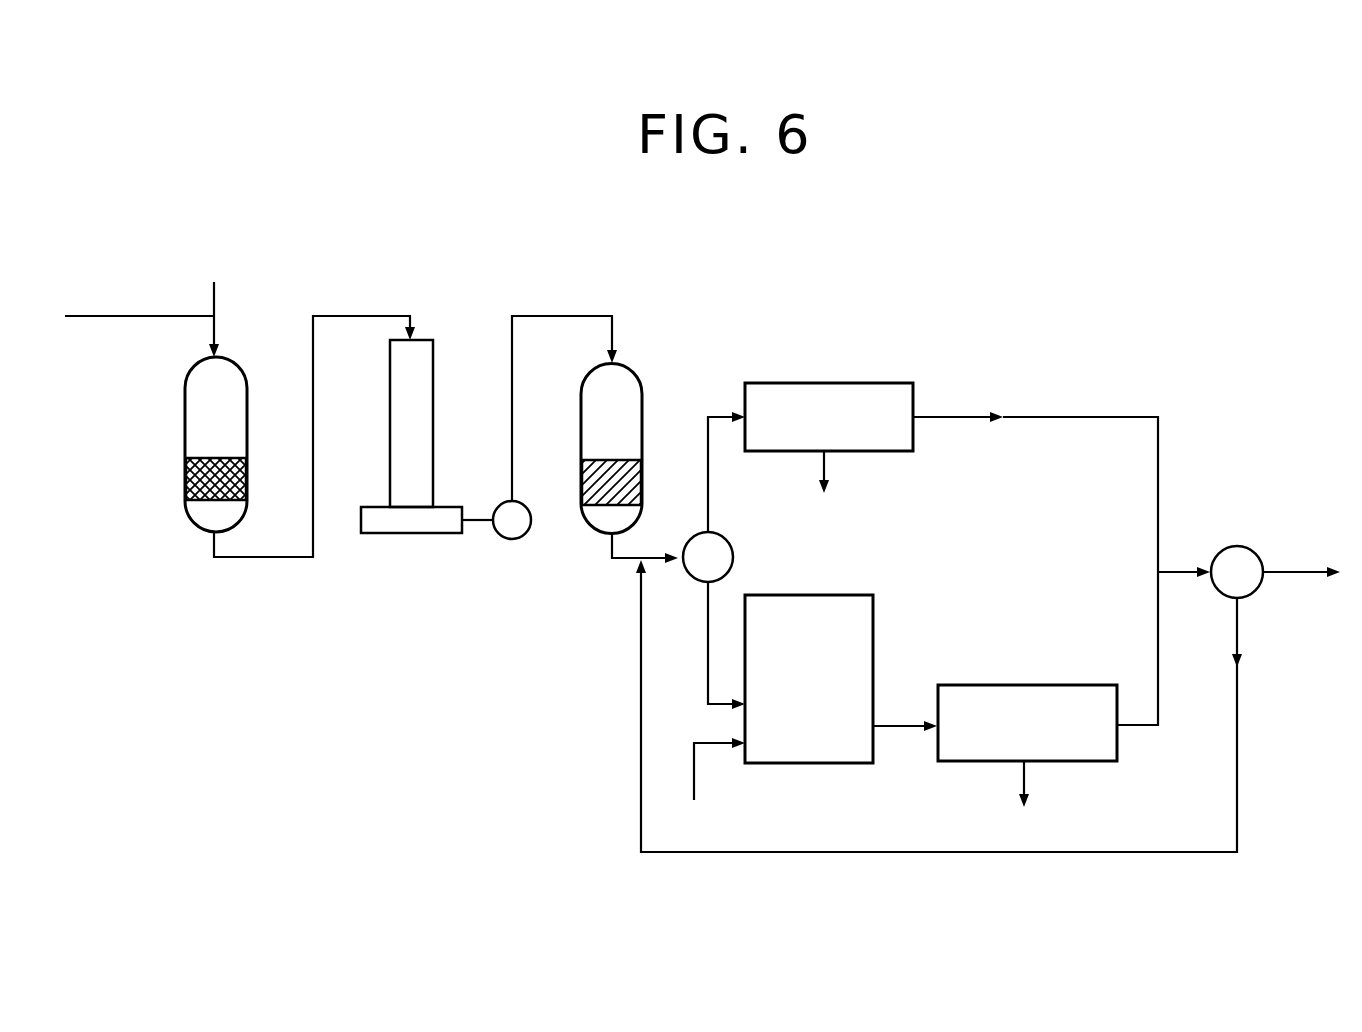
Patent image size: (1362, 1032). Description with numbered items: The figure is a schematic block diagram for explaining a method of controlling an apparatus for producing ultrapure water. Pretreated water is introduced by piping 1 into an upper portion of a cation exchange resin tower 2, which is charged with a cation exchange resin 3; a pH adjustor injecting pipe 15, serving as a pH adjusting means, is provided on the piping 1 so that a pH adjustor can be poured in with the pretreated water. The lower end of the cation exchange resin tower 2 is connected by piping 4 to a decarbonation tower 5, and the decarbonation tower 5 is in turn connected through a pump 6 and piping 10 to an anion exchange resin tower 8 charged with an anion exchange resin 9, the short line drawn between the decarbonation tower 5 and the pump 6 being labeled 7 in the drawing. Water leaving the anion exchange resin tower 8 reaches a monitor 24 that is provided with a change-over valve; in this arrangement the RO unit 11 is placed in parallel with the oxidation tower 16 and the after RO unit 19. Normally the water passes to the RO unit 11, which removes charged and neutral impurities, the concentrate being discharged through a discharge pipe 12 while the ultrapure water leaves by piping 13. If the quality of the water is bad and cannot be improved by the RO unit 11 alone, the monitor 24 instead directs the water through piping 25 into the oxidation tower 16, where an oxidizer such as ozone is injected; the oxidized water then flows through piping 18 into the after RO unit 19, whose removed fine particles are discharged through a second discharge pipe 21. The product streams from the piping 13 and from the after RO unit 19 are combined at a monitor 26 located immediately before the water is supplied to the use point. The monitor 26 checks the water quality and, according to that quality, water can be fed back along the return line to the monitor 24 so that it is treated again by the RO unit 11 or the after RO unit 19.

The piping 1 is at (110, 318).
The cation exchange resin tower 2 is at (185, 421).
The cation exchange resin 3 is at (185, 485).
The piping 4 is at (269, 557).
The decarbonation tower 5 is at (407, 534).
The pump 6 is at (512, 540).
The line to pump 7 is at (482, 522).
The anion exchange resin tower 8 is at (642, 393).
The anion exchange resin 9 is at (581, 492).
The piping 10 is at (555, 316).
The RO unit 11 is at (822, 383).
The discharge pipe 12 is at (829, 470).
The piping 13 is at (948, 417).
The pH adjustor injecting pipe 15 is at (214, 303).
The oxidation tower 16 is at (873, 620).
The piping 18 is at (905, 728).
The after RO unit 19 is at (1017, 685).
The second discharge pipe 21 is at (1030, 778).
The monitor 24 is at (733, 556).
The piping 25 is at (708, 657).
The monitor 26 is at (1232, 546).